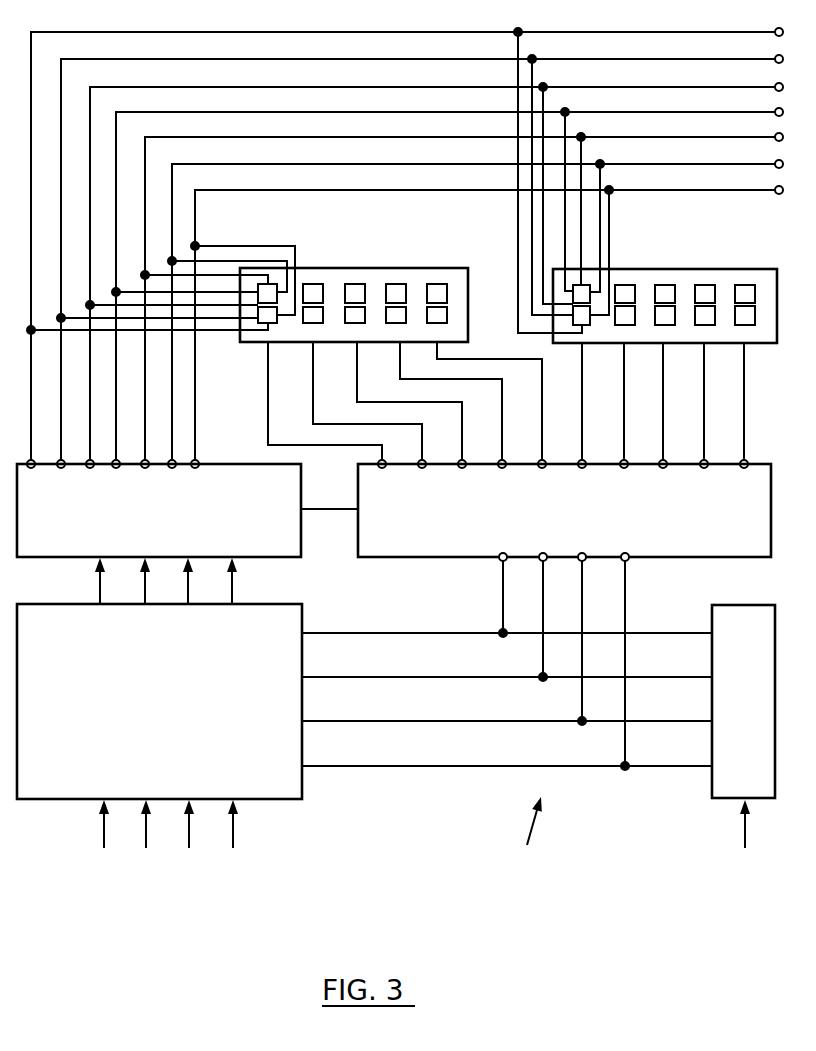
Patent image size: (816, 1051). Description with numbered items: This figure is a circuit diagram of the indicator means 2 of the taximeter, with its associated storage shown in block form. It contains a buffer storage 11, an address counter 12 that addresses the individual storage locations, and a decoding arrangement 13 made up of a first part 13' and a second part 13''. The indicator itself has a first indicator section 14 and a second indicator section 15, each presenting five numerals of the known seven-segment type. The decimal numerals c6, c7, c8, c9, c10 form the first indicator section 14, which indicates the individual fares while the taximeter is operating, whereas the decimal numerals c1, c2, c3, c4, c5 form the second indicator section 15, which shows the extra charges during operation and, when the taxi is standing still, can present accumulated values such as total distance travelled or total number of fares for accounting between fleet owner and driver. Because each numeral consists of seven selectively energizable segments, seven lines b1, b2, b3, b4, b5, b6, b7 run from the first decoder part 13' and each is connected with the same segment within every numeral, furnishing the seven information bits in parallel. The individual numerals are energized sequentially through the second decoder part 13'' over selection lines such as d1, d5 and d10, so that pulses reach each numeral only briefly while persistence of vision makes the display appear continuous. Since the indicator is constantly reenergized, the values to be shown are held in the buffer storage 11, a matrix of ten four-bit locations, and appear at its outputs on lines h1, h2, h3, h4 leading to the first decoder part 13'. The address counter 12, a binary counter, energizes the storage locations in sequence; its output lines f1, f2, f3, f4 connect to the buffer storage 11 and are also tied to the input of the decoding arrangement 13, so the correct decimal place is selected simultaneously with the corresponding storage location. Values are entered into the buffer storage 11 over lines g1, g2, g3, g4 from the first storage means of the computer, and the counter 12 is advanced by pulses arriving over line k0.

The indicator means 2 is at (541, 824).
The buffer storage 11 is at (175, 712).
The address counter 12 is at (747, 588).
The decoding arrangement 13 is at (329, 496).
The first part of decoding arrangement 13' is at (159, 510).
The second part of decoding arrangement 13'' is at (564, 510).
The first indicator section 14 is at (482, 281).
The second indicator section 15 is at (790, 281).
The segment energization line b1 is at (147, 30).
The segment energization line b2 is at (188, 58).
The segment energization line b3 is at (219, 86).
The segment energization line b4 is at (259, 111).
The segment energization line b5 is at (298, 136).
The segment energization line b6 is at (336, 163).
The segment energization line b7 is at (374, 189).
The decimal numeral c1 is at (744, 285).
The decimal numeral c2 is at (704, 285).
The decimal numeral c3 is at (664, 285).
The decimal numeral c4 is at (624, 285).
The decimal numeral c5 is at (585, 325).
The decimal numeral c6 is at (437, 284).
The decimal numeral c7 is at (396, 284).
The decimal numeral c8 is at (354, 284).
The decimal numeral c9 is at (312, 284).
The decimal numeral c10 is at (270, 323).
The numeral selection line d1 is at (747, 457).
The numeral selection line d5 is at (584, 457).
The numeral selection line d10 is at (386, 457).
The counter output line f1 is at (479, 762).
The counter output line f2 is at (459, 717).
The counter output line f3 is at (438, 673).
The counter output line f4 is at (418, 629).
The buffer storage input line g1 is at (105, 833).
The buffer storage input line g2 is at (147, 833).
The buffer storage input line g3 is at (190, 833).
The buffer storage input line g4 is at (234, 833).
The buffer storage output line h1 is at (101, 593).
The buffer storage output line h2 is at (146, 593).
The buffer storage output line h3 is at (188, 589).
The buffer storage output line h4 is at (232, 589).
The counter advancing line k0 is at (756, 827).